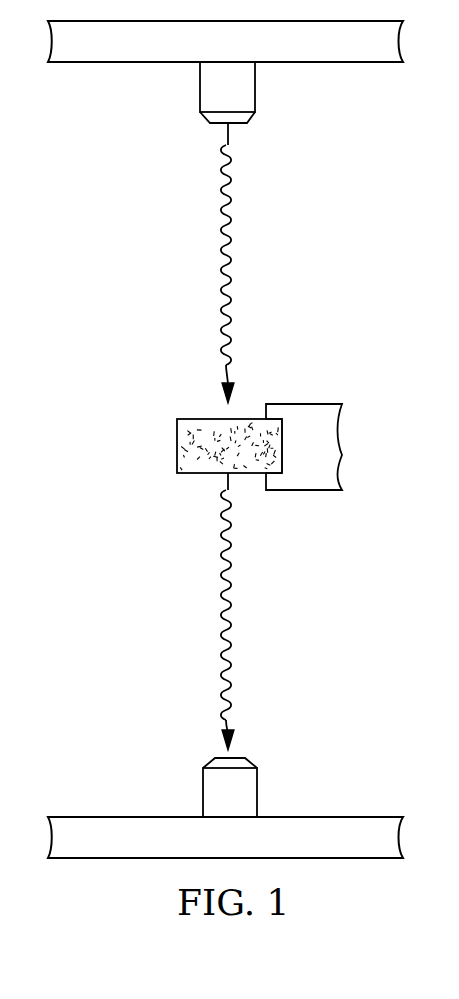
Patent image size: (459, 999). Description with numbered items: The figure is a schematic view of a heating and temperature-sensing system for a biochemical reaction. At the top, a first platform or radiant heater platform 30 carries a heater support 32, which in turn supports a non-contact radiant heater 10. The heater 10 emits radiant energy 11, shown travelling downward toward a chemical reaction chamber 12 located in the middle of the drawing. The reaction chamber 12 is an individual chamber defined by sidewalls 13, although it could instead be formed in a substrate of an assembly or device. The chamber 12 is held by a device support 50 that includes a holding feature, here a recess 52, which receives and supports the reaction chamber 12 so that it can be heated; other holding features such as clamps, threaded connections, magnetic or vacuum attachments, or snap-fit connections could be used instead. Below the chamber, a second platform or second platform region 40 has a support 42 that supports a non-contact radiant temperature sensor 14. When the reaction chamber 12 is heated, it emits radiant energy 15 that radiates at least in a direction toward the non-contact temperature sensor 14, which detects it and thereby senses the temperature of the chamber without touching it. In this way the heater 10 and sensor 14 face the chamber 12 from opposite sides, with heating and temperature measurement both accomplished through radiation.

The radiant heater platform 30 is at (95, 63).
The heater support 32 is at (200, 85).
The non-contact radiant heater 10 is at (212, 122).
The radiant energy 11 is at (230, 249).
The chemical reaction chamber 12 is at (178, 440).
The sidewalls 13 is at (202, 425).
The device support 50 is at (342, 440).
The recess 52 is at (273, 422).
The radiant energy 15 is at (229, 600).
The non-contact radiant temperature sensor 14 is at (212, 758).
The support 42 is at (203, 795).
The second platform region 40 is at (320, 817).